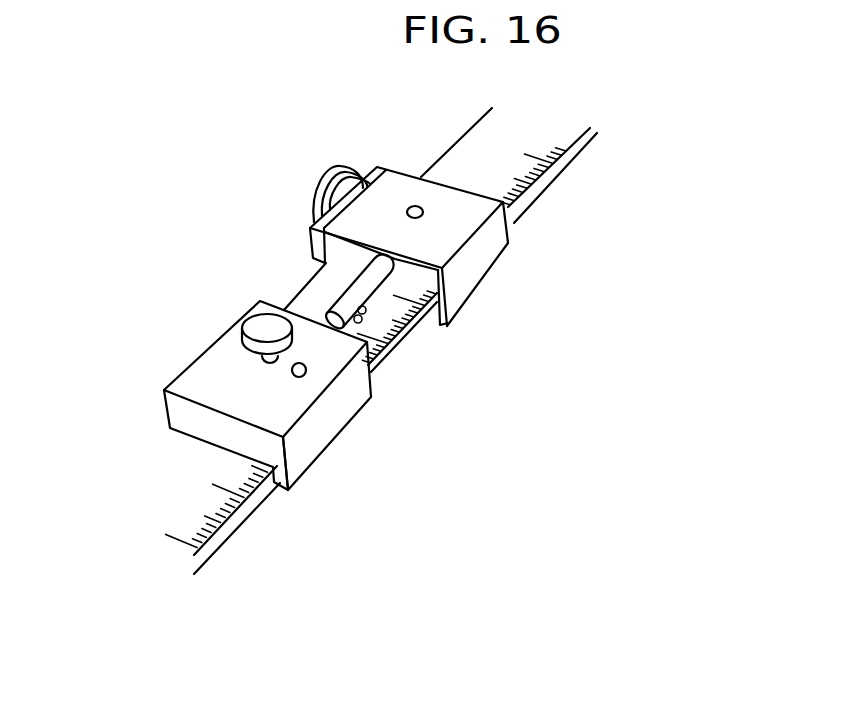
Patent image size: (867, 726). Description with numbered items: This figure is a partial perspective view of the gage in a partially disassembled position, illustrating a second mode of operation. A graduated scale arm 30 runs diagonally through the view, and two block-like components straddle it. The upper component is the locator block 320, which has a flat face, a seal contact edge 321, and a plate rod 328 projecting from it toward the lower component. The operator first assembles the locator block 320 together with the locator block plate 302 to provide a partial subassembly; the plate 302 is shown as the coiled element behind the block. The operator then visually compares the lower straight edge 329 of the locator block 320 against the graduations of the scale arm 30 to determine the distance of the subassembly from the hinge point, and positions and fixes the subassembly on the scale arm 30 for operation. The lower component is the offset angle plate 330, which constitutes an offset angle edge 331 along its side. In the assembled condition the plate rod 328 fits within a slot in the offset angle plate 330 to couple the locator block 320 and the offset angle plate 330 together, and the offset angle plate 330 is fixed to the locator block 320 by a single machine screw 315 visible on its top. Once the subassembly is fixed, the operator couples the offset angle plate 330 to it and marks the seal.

The graduated scale arm 30 is at (548, 137).
The locator block 320 is at (412, 240).
The locator block plate 302 is at (307, 245).
The plate rod 328 is at (335, 302).
The lower straight edge 329 is at (428, 270).
The seal contact edge 321 is at (443, 325).
The offset angle plate 330 is at (275, 391).
The offset angle edge 331 is at (372, 434).
The machine screw 315 is at (258, 323).